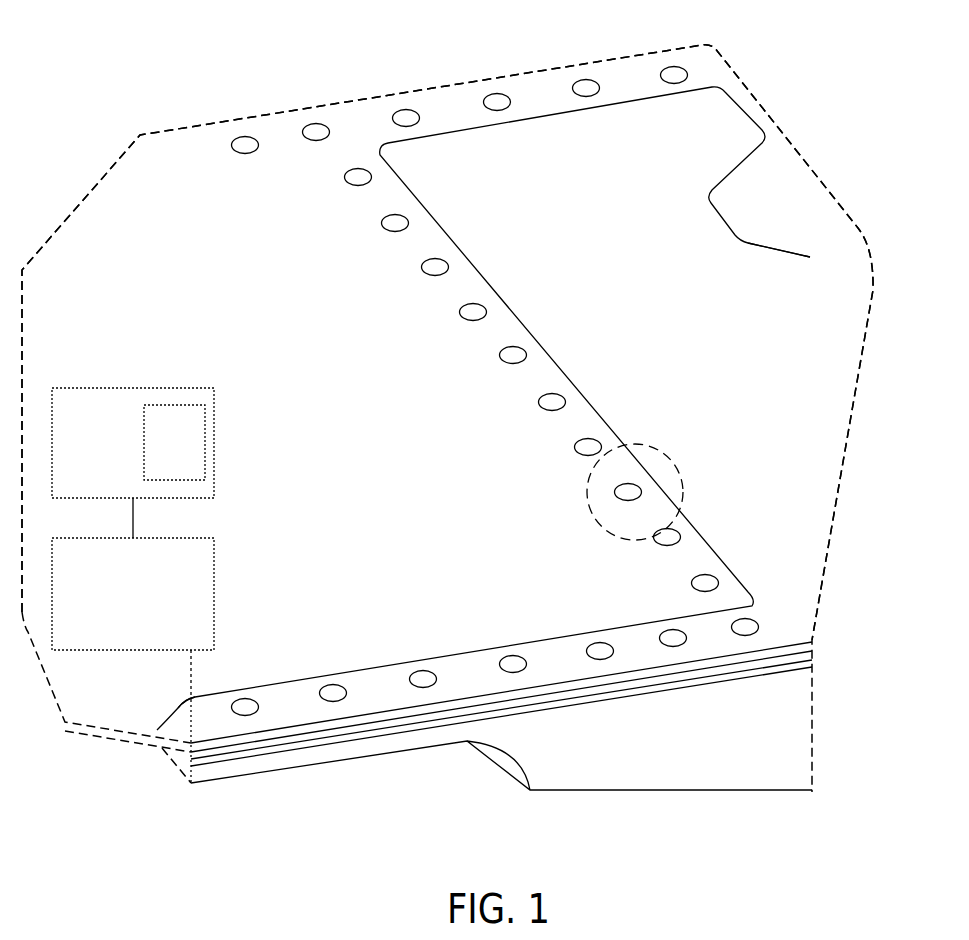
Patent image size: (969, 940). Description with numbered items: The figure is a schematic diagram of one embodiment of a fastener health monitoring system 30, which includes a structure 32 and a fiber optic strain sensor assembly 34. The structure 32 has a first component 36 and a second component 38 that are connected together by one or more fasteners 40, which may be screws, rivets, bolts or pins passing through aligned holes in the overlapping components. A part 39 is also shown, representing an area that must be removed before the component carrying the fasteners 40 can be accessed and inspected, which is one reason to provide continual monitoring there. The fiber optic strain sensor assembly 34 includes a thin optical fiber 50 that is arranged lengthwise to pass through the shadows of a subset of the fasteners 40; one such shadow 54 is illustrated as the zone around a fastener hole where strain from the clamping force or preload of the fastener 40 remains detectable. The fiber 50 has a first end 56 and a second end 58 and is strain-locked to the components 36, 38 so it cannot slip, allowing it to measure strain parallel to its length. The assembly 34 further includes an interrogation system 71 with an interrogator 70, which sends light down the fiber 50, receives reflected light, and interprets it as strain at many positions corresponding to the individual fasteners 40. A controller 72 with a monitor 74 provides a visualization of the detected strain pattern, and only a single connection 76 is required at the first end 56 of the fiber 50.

The fastener health monitoring system 30 is at (289, 74).
The structure 32 is at (255, 268).
The fiber optic strain sensor assembly 34 is at (170, 699).
The first component 36 is at (257, 733).
The second component 38 is at (343, 737).
The part 39 is at (643, 752).
The fasteners 40 is at (496, 99).
The optical fiber 50 is at (458, 128).
The shadow 54 is at (662, 452).
The first end 56 is at (178, 708).
The second end 58 is at (810, 257).
The interrogator 70 is at (143, 594).
The interrogation system 71 is at (203, 520).
The controller 72 is at (98, 430).
The monitor 74 is at (171, 430).
The connection 76 is at (193, 683).